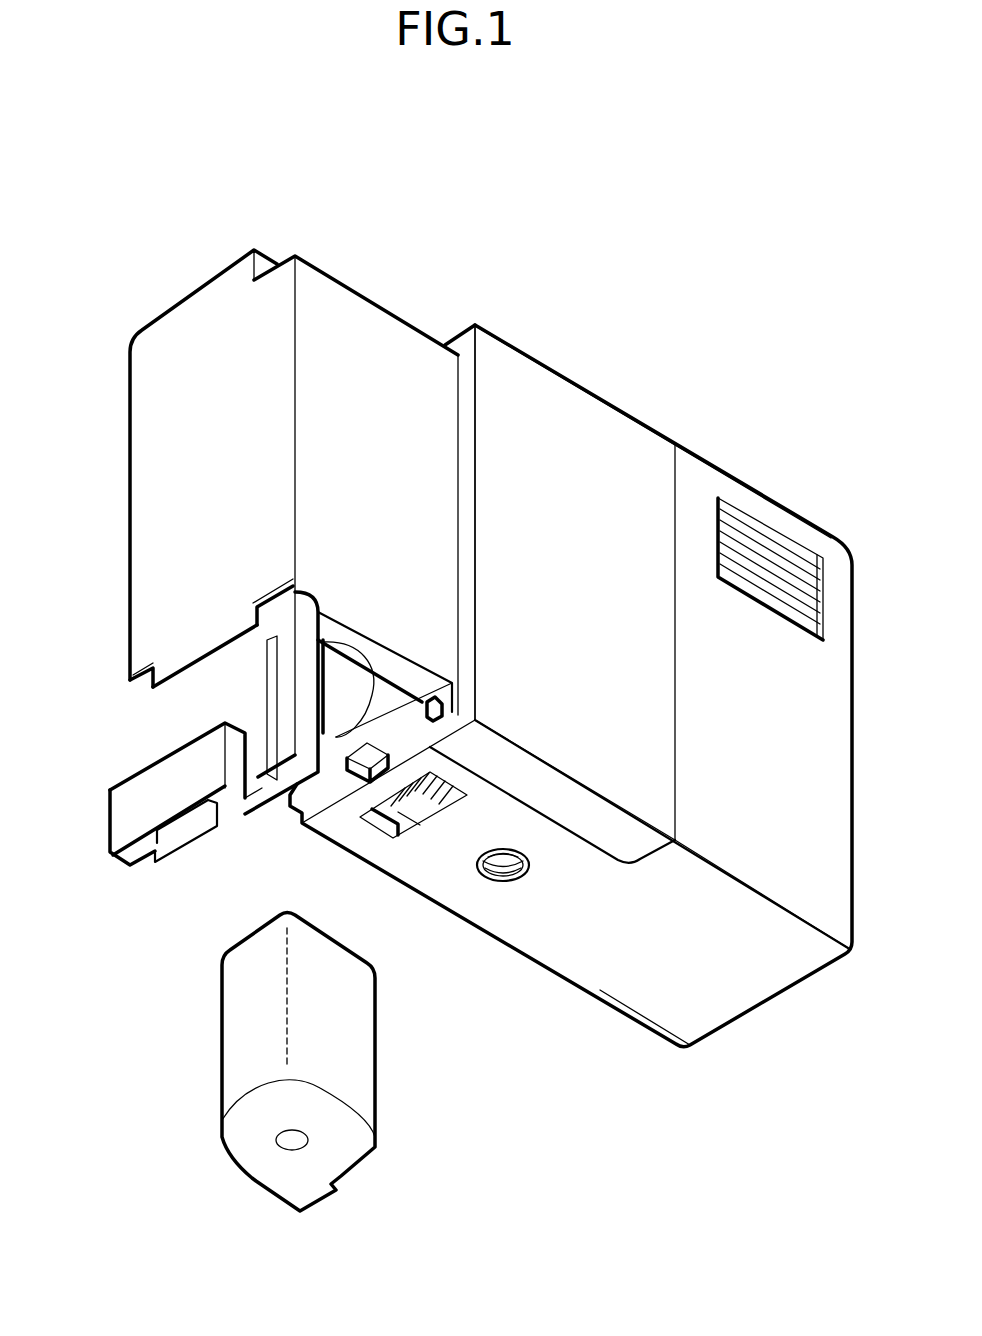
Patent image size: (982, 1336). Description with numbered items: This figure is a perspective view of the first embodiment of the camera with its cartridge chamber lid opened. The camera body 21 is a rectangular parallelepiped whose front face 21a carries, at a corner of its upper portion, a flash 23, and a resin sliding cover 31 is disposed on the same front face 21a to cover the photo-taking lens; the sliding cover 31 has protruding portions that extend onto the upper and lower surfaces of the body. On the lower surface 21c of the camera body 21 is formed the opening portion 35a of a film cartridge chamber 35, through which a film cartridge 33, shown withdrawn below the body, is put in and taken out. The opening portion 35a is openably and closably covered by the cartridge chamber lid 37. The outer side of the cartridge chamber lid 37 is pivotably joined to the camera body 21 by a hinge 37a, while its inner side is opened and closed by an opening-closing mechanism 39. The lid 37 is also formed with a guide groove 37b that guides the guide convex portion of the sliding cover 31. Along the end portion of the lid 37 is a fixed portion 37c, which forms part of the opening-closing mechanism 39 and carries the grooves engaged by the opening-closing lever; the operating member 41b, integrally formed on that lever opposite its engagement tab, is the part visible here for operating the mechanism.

The camera body 21 is at (703, 446).
The front face 21a is at (770, 832).
The lower surface 21c is at (645, 983).
The flash 23 is at (775, 537).
The sliding cover 31 is at (530, 400).
The film cartridge 33 is at (362, 1088).
The film cartridge chamber 35 is at (345, 678).
The opening portion 35a is at (362, 685).
The cartridge chamber lid 37 is at (150, 713).
The hinge 37a is at (208, 640).
The guide groove 37b is at (265, 742).
The fixed portion 37c is at (123, 812).
The opening-closing mechanism 39 is at (396, 718).
The operating member 41b is at (370, 768).